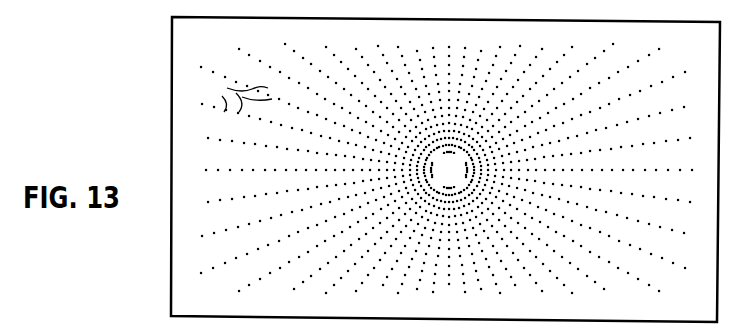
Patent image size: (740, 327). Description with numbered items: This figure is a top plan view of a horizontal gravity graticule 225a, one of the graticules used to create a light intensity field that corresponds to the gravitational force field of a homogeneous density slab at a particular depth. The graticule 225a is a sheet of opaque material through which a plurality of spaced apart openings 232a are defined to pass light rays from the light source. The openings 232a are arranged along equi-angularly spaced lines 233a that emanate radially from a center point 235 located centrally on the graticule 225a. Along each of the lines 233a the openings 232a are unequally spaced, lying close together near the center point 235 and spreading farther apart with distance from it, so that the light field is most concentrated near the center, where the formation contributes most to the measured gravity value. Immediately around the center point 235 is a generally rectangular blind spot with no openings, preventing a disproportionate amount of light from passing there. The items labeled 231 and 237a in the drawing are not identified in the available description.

The gravity graticule 225a is at (170, 52).
The radial dot pattern 231 is at (172, 104).
The openings 232a is at (231, 95).
The equi-angularly spaced lines 233a is at (250, 140).
The central target region 237a is at (452, 165).
The center point 235 is at (452, 170).